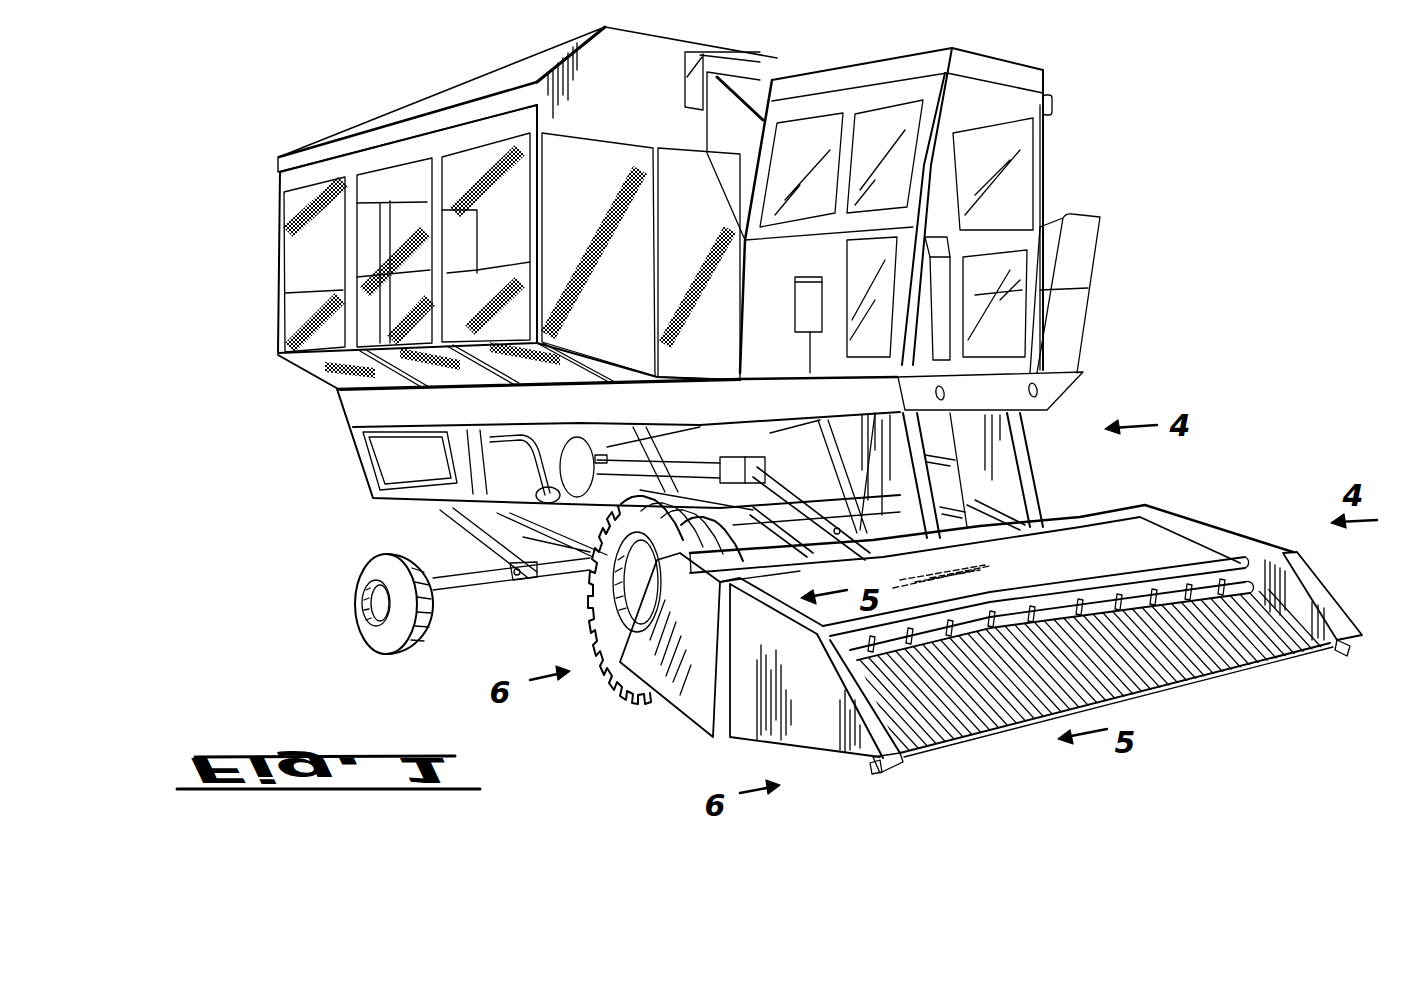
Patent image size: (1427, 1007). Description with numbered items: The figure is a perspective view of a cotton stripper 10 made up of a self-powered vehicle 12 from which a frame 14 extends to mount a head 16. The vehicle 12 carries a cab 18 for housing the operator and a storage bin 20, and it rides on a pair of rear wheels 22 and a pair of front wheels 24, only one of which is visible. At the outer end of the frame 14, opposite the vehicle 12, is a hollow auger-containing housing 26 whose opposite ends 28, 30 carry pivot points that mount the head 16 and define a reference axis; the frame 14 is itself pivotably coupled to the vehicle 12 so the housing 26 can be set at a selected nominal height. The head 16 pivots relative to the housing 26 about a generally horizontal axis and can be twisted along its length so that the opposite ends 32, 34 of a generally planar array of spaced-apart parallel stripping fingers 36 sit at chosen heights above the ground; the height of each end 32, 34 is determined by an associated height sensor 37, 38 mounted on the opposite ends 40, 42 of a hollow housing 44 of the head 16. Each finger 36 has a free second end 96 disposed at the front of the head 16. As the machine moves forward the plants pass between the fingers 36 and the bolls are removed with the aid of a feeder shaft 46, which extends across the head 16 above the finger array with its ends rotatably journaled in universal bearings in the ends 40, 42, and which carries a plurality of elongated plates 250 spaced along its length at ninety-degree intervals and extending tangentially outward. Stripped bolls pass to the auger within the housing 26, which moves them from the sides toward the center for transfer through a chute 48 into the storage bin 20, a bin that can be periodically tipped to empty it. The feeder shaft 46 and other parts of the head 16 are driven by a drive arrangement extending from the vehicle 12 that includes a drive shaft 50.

The cotton stripper 10 is at (1190, 270).
The vehicle 12 is at (1052, 81).
The frame 14 is at (780, 537).
The head 16 is at (1206, 520).
The cab 18 is at (1017, 130).
The storage bin 20 is at (385, 112).
The rear wheels 22 is at (362, 592).
The front wheels 24 is at (590, 603).
The auger-containing housing 26 is at (1125, 520).
The end of housing 28 is at (673, 680).
The end of housing 30 is at (1168, 510).
The end of finger array 32 is at (900, 755).
The end of finger array 34 is at (1337, 645).
The stripping fingers 36 is at (1225, 660).
The height sensor 37 is at (875, 773).
The height sensor 38 is at (1347, 653).
The end of head housing 40 is at (823, 740).
The end of head housing 42 is at (1350, 623).
The hollow housing 44 is at (1253, 560).
The feeder shaft 46 is at (1253, 588).
The chute 48 is at (953, 458).
The drive shaft 50 is at (840, 530).
The second end of finger 96 is at (1010, 725).
The elongated plates 250 is at (1187, 587).